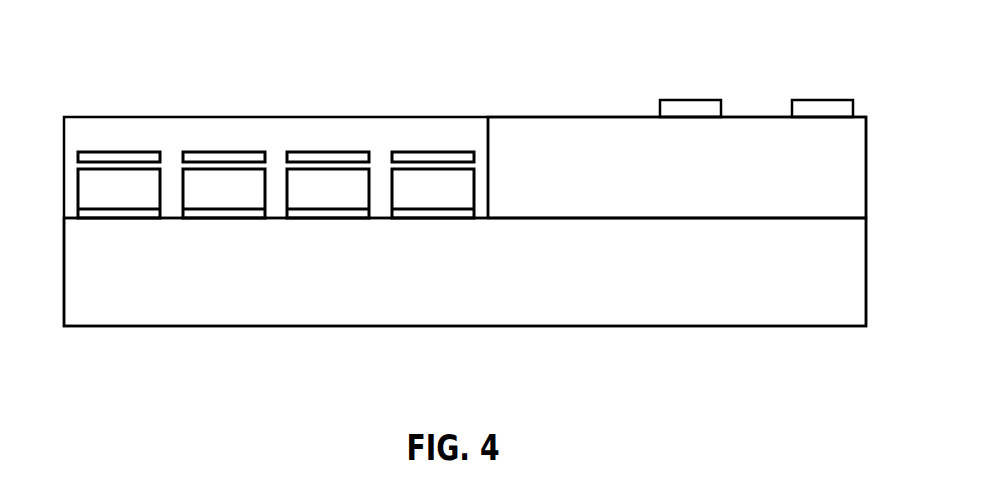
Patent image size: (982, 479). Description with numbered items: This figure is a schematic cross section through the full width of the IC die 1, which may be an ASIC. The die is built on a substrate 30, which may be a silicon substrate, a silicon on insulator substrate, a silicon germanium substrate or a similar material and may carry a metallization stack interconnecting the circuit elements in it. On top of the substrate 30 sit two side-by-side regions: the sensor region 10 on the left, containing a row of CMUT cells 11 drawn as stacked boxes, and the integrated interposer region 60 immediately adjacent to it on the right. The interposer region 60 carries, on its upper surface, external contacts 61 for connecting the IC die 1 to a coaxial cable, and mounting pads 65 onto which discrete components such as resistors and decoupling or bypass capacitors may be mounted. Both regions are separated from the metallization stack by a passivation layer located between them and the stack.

The IC die 1 is at (130, 326).
The sensor region 10 is at (178, 143).
The CMUT cells 11 is at (322, 173).
The substrate 30 is at (185, 299).
The interposer region 60 is at (523, 143).
The external contacts 61 is at (828, 108).
The mounting pads 65 is at (698, 108).